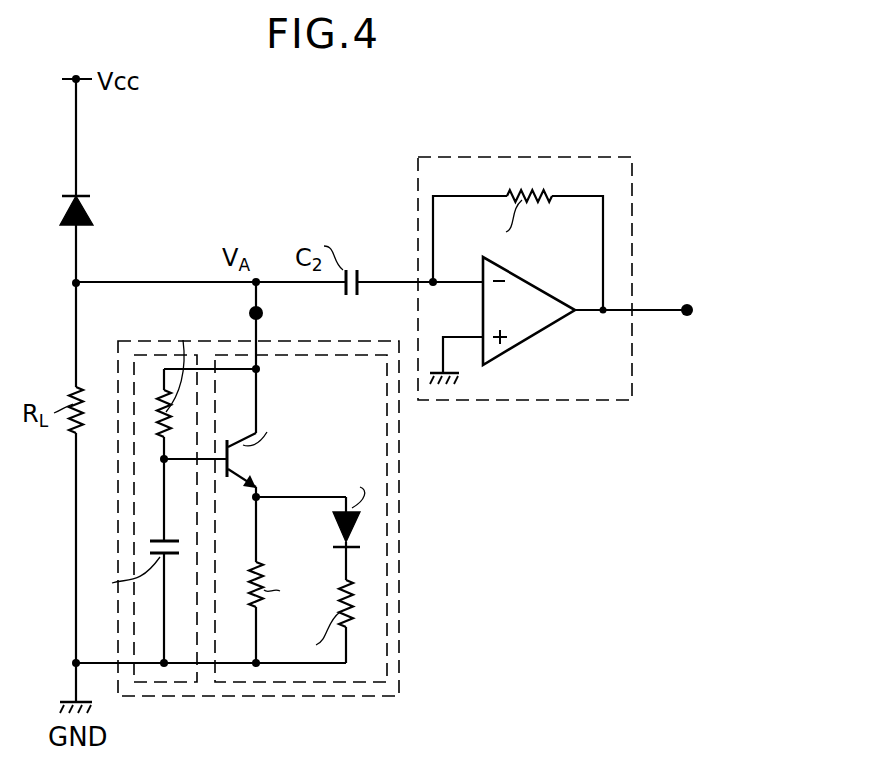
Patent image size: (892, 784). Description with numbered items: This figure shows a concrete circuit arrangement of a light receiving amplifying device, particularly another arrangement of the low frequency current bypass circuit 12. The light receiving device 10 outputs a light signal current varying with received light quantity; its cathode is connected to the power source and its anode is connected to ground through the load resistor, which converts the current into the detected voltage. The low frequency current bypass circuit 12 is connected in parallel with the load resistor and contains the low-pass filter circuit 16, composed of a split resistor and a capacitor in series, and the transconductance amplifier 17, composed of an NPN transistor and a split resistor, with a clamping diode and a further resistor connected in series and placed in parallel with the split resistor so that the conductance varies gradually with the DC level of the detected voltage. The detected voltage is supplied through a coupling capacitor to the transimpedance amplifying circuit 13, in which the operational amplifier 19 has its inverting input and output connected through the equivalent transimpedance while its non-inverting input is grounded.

The light receiving device 10 is at (89, 212).
The low frequency current bypass circuit 12 is at (400, 492).
The transimpedance amplifying circuit 13 is at (552, 246).
The low-pass filter circuit 16 is at (134, 520).
The transconductance amplifier 17 is at (389, 598).
The operational amplifier 19 is at (536, 338).